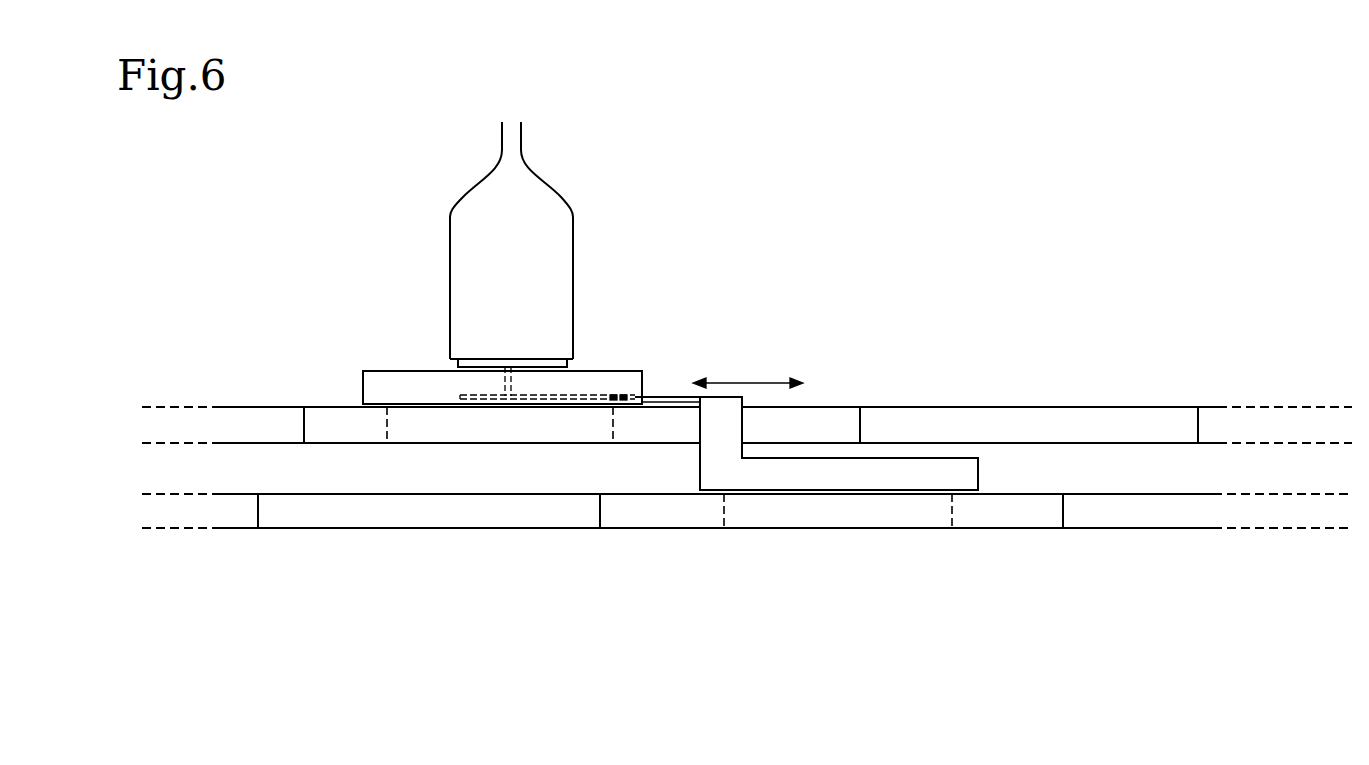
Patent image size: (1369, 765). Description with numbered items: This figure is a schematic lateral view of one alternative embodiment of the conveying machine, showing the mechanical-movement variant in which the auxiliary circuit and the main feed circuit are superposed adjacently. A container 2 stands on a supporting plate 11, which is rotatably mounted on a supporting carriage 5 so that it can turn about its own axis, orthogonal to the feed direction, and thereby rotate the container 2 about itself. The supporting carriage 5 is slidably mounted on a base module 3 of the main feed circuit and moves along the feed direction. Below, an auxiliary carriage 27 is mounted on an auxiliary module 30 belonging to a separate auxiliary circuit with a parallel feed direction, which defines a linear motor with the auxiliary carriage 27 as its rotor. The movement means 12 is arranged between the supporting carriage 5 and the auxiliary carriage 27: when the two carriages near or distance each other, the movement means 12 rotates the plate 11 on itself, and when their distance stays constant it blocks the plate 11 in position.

The container 2 is at (533, 237).
The supporting plate 11 is at (495, 363).
The supporting carriage 5 is at (618, 382).
The movement means 12 is at (655, 388).
The base module 3 is at (807, 422).
The auxiliary carriage 27 is at (842, 473).
The auxiliary module 30 is at (445, 510).